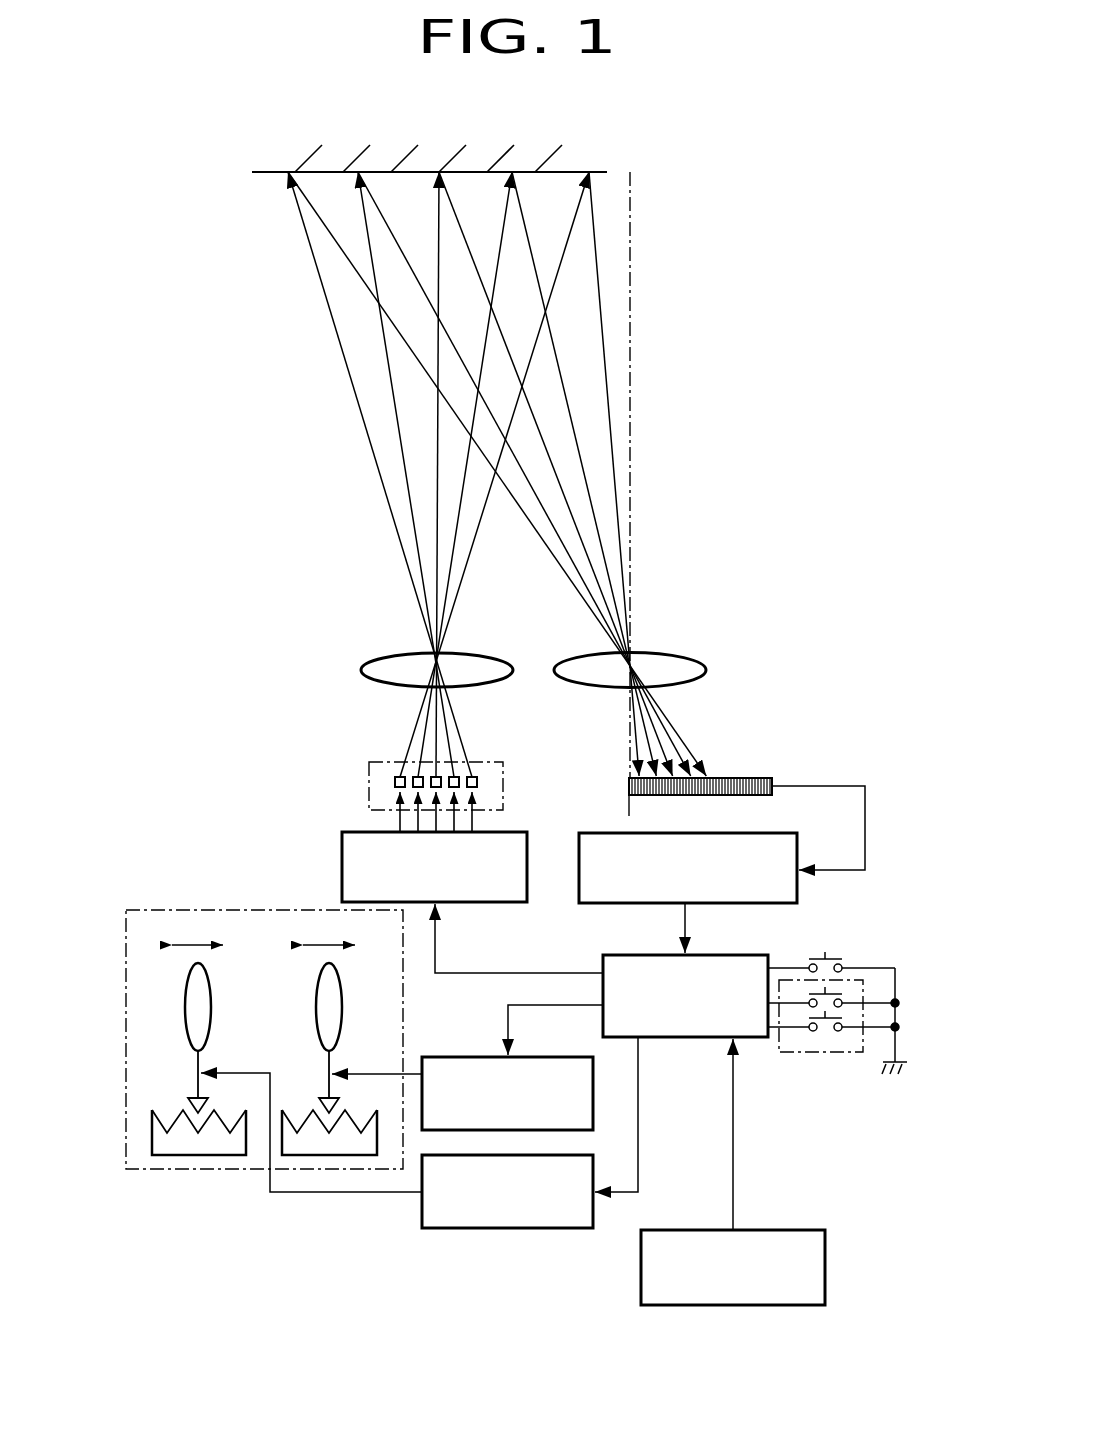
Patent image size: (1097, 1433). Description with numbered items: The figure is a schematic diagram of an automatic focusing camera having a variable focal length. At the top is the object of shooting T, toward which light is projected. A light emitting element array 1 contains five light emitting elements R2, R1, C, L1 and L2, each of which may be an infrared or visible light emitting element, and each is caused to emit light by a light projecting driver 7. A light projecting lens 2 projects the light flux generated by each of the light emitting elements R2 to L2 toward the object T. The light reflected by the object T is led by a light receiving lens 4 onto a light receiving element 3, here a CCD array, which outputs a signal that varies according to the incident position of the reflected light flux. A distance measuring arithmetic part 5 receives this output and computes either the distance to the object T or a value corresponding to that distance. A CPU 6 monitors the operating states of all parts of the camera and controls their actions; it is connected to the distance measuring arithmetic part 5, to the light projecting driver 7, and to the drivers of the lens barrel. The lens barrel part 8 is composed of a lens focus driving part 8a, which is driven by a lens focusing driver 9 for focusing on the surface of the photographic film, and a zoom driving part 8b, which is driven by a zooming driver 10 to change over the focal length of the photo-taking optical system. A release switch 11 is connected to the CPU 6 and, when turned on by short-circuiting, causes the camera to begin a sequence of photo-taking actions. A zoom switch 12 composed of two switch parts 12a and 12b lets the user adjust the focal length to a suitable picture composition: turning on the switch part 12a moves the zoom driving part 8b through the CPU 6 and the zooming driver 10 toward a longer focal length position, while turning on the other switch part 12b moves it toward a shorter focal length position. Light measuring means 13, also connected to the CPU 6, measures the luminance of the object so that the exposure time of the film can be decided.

The object of shooting T is at (429, 149).
The light emitting element array 1 is at (411, 757).
The light emitting element R2 is at (396, 780).
The light emitting element R1 is at (414, 779).
The light emitting element C is at (432, 776).
The light emitting element L1 is at (457, 777).
The light emitting element L2 is at (479, 783).
The light projecting lens 2 is at (368, 662).
The light receiving element 3 is at (755, 776).
The light receiving lens 4 is at (690, 662).
The distance measuring arithmetic part 5 is at (797, 852).
The CPU 6 is at (602, 964).
The light projecting driver 7 is at (342, 862).
The lens barrel part 8 is at (264, 1079).
The lens focus driving part 8a is at (331, 1145).
The zoom driving part 8b is at (200, 1145).
The lens focusing driver 9 is at (470, 1057).
The zooming driver 10 is at (515, 1229).
The release switch 11 is at (834, 956).
The zoom switch 12 is at (859, 1009).
The switch part 12a is at (838, 990).
The switch part 12b is at (826, 1032).
The light measuring means 13 is at (826, 1242).